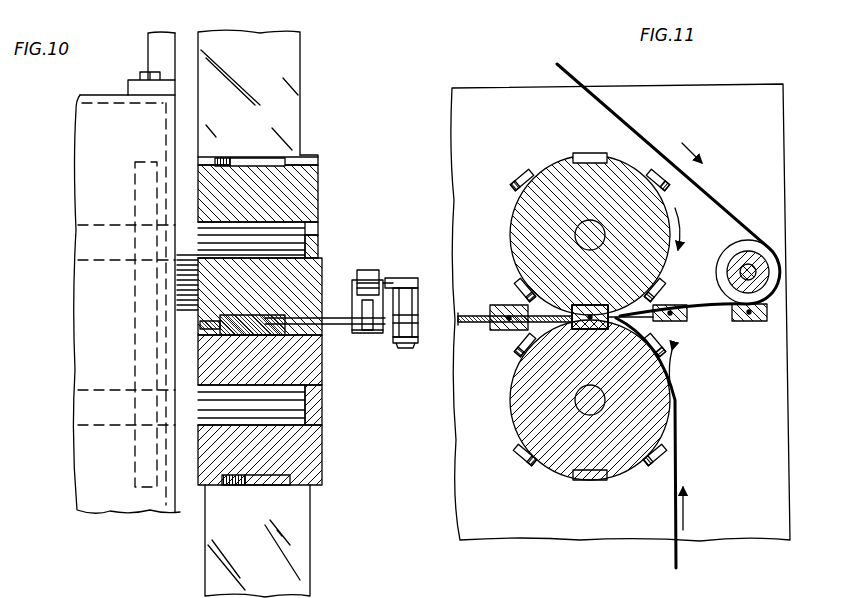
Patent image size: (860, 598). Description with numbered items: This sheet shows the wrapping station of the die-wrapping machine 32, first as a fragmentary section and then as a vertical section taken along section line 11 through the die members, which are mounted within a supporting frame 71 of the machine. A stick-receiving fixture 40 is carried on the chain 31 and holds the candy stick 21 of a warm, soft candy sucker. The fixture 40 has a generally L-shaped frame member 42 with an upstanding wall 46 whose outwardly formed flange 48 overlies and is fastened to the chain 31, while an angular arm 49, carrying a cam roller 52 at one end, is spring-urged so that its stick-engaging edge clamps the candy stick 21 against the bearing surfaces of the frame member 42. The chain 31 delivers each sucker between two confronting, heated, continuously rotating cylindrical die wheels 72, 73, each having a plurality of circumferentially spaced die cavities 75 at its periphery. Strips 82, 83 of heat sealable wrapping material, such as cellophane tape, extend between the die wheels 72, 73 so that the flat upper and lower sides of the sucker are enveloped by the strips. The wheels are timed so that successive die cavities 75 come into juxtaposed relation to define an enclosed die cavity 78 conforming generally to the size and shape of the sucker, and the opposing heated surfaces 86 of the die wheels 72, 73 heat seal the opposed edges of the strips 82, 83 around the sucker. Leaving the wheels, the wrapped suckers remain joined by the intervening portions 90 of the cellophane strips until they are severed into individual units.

In FIG. 10, the section line 11 is at (270, 210).
In FIG. 10, the candy stick 21 is at (335, 318).
In FIG. 11, the candy stick 21 is at (510, 310).
In FIG. 10, the chain 31 is at (420, 340).
In FIG. 10, the die-wrapping machine 32 is at (96, 181).
In FIG. 10, the stick-receiving fixture 40 is at (355, 333).
In FIG. 10, the L-shaped frame member 42 is at (362, 340).
In FIG. 10, the upstanding wall 46 is at (378, 335).
In FIG. 10, the flange 48 is at (410, 283).
In FIG. 10, the angular arm 49 is at (368, 312).
In FIG. 10, the cam roller 52 is at (368, 270).
In FIG. 10, the frame 71 is at (175, 110).
In FIG. 11, the frame 71 is at (758, 95).
In FIG. 10, the die wheel 72 is at (318, 180).
In FIG. 11, the die wheel 72 is at (512, 226).
In FIG. 10, the die wheel 73 is at (260, 410).
In FIG. 11, the die wheel 73 is at (517, 410).
In FIG. 10, the die cavities 75 is at (238, 162).
In FIG. 11, the die cavities 75 is at (512, 182).
In FIG. 10, the enclosed die cavity 78 is at (180, 280).
In FIG. 10, the strip of wrapping material 82 is at (285, 50).
In FIG. 11, the strip of wrapping material 82 is at (572, 80).
In FIG. 10, the strip of wrapping material 83 is at (300, 517).
In FIG. 11, the strip of wrapping material 83 is at (680, 472).
In FIG. 10, the heated surfaces 86 is at (222, 318).
In FIG. 11, the heated surfaces 86 is at (528, 305).
In FIG. 11, the intervening portions 90 is at (487, 320).